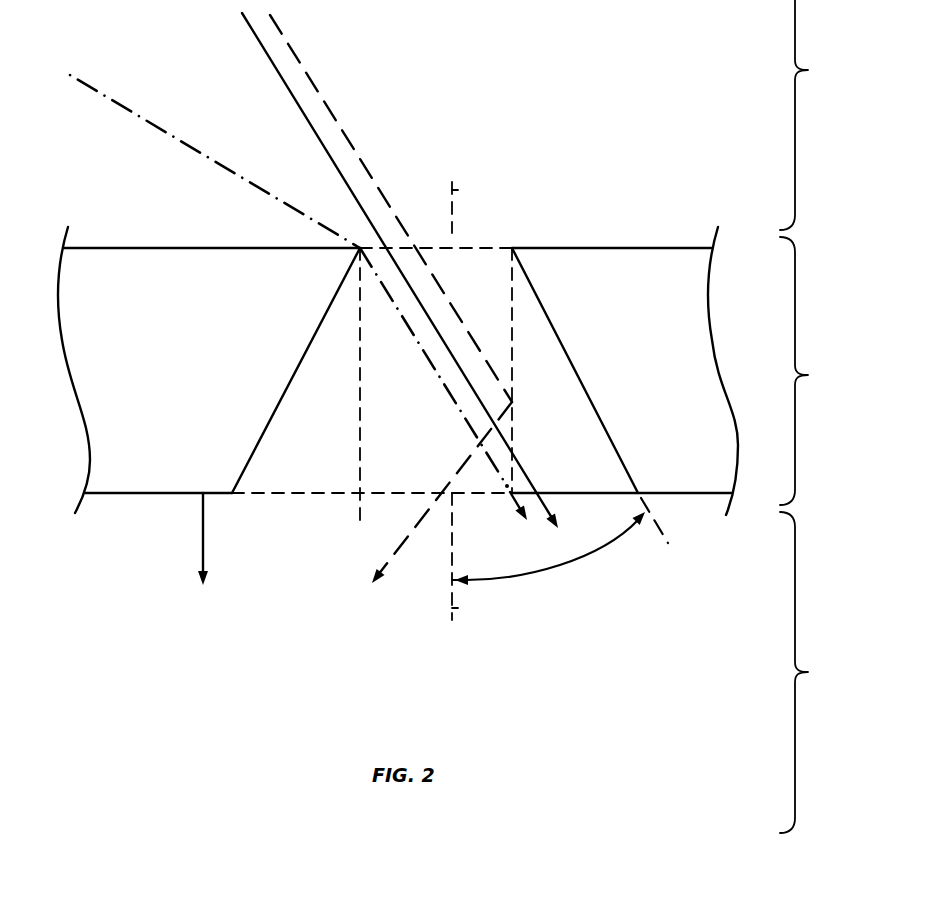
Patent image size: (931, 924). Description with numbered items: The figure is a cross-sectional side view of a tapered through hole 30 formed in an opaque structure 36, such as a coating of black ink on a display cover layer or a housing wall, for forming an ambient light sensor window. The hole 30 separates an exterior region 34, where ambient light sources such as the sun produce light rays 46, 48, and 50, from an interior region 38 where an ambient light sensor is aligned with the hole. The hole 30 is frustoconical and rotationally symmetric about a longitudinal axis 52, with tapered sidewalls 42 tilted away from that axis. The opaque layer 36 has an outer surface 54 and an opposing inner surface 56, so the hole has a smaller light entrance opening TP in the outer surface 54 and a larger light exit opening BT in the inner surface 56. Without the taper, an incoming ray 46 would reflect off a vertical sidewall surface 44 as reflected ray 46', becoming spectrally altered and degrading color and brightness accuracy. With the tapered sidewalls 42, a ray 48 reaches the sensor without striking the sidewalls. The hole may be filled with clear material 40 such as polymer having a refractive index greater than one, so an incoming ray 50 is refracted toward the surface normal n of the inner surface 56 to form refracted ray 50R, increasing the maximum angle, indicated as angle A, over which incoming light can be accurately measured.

The hole 30 is at (418, 184).
The region 34 is at (808, 115).
The opaque structure 36 is at (808, 371).
The region 38 is at (808, 672).
The clear material 40 is at (275, 437).
The sidewalls 42 is at (305, 376).
The surface 44 is at (512, 328).
The ambient light ray 46 is at (391, 208).
The reflected ray 46' is at (442, 518).
The light ray 48 is at (266, 57).
The ambient light ray 50 is at (97, 88).
The refracted light ray 50R is at (432, 367).
The longitudinal axis 52 is at (456, 190).
The outer surface 54 is at (146, 248).
The inner surface 56 is at (110, 498).
The outer opening TP is at (488, 233).
The inner opening BT is at (295, 522).
The surface normal n is at (193, 543).
The angle A is at (550, 553).